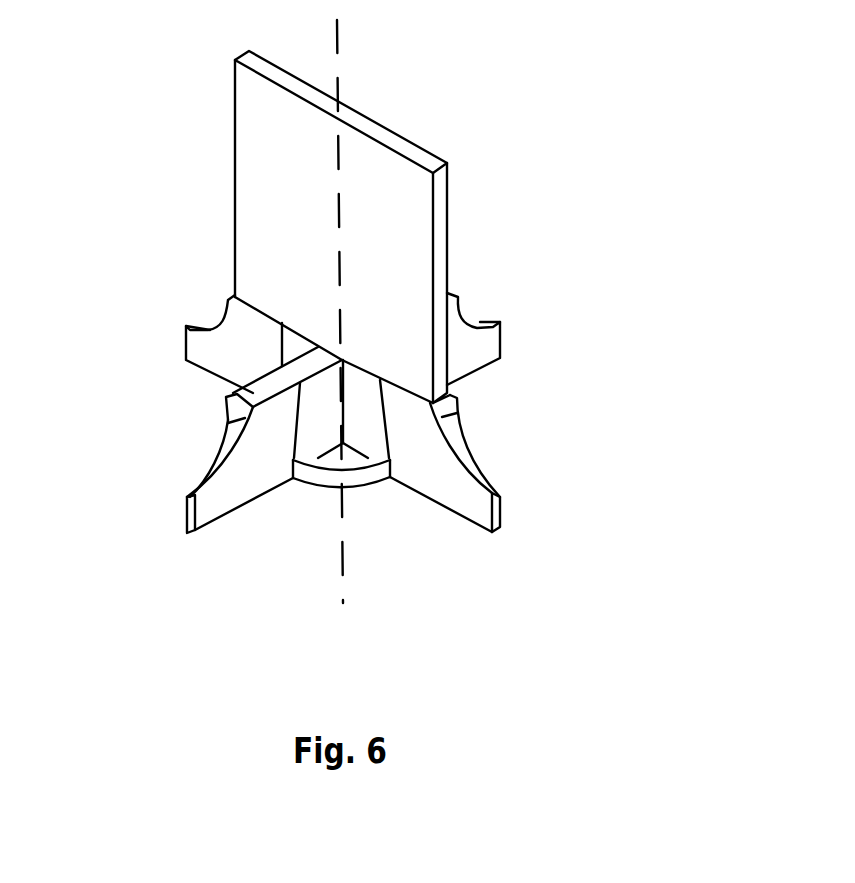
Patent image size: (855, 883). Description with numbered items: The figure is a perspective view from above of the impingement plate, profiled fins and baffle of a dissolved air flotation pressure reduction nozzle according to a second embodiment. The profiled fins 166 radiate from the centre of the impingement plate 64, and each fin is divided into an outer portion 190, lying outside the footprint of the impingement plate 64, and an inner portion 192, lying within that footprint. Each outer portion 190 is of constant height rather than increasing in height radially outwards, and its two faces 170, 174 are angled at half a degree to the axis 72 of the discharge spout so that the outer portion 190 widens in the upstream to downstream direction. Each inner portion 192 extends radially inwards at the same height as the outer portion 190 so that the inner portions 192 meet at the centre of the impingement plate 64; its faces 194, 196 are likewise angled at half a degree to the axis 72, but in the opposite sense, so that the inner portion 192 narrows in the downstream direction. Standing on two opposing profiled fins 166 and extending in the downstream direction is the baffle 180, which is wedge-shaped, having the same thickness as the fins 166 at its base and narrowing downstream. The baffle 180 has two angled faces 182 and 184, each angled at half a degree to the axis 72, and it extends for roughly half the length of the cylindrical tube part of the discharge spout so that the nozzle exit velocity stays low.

The impingement plate 64 is at (330, 480).
The axis 72 is at (362, 307).
The profiled fins 166 is at (213, 345).
The face 170 is at (215, 458).
The face 174 is at (227, 500).
The baffle 180 is at (377, 137).
The angled face 182 is at (265, 148).
The angled face 184 is at (450, 237).
The outer portion 190 is at (448, 482).
The inner portion 192 is at (368, 425).
The face 194 is at (370, 442).
The face 196 is at (320, 432).